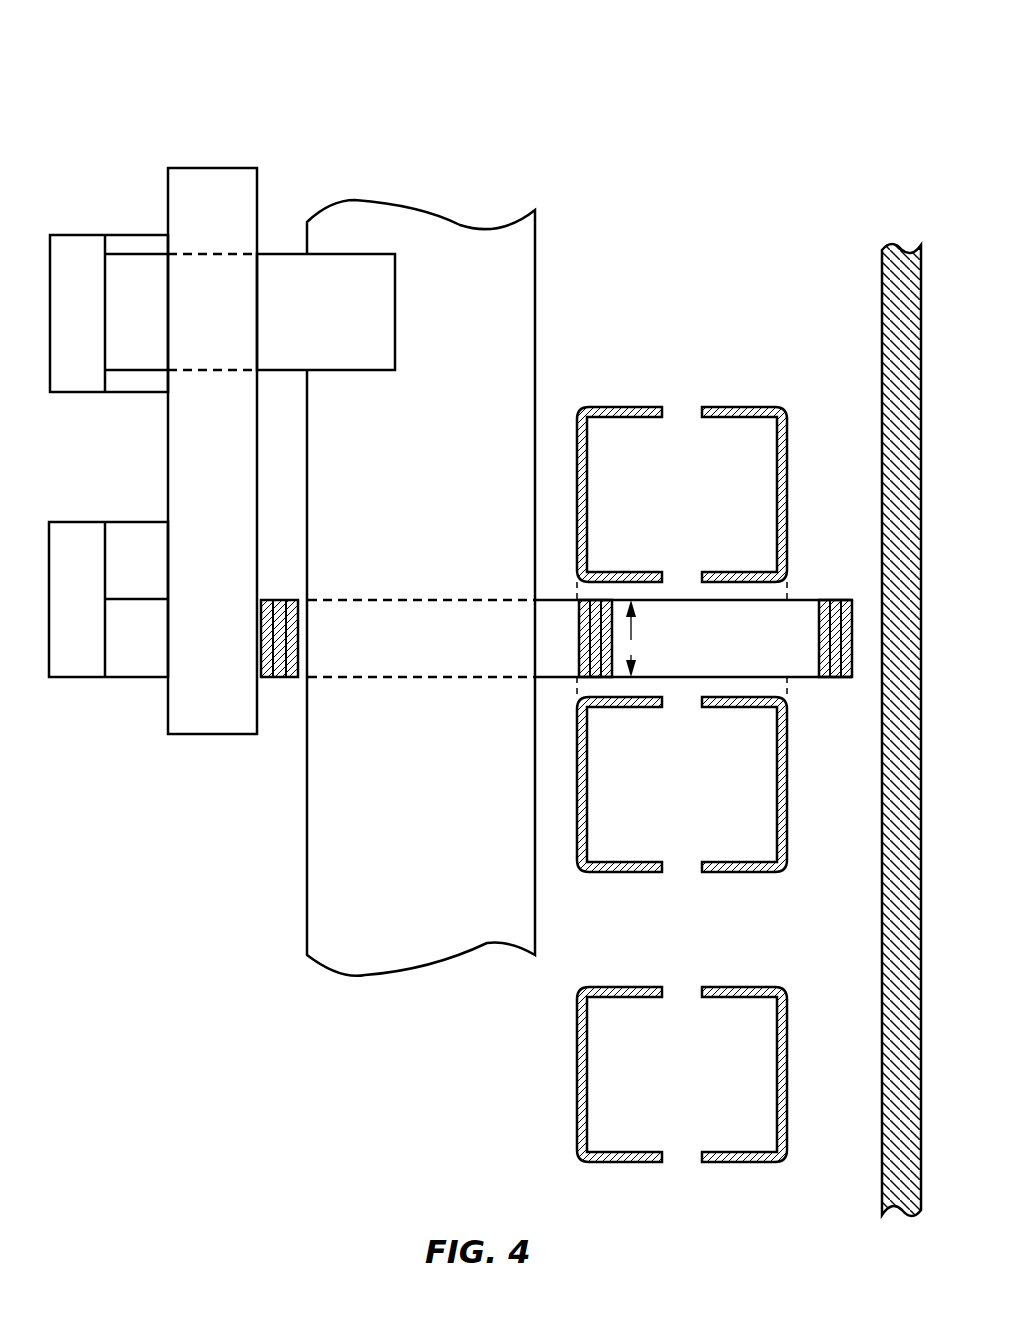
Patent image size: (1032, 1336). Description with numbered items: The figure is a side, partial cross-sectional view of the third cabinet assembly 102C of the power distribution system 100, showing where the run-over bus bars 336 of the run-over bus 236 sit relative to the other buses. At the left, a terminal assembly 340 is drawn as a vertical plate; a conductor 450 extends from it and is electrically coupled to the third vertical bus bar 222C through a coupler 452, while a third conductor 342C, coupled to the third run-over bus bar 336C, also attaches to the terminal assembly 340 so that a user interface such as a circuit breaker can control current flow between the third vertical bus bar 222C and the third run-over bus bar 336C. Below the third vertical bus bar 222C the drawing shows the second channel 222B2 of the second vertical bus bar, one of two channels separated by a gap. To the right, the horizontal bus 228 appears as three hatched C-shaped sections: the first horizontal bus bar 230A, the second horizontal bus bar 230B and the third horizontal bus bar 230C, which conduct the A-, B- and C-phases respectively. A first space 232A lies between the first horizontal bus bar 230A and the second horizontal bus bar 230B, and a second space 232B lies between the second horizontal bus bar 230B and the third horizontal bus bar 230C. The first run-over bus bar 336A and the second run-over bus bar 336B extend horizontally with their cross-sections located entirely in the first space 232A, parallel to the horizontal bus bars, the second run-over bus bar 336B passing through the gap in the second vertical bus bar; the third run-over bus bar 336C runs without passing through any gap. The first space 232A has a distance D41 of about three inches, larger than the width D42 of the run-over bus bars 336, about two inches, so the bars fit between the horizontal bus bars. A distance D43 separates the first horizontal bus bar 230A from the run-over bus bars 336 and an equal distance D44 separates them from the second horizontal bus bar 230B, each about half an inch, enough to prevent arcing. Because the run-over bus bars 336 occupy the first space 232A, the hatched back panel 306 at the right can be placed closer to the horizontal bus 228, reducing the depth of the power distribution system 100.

The power distribution system 100 is at (486, 84).
The third cabinet assembly 102C is at (595, 111).
The third vertical bus bar 222C is at (536, 268).
The second channel 222B2 is at (307, 820).
The horizontal bus 228 is at (651, 385).
The first horizontal bus bar 230A is at (745, 408).
The second horizontal bus bar 230B is at (737, 873).
The third horizontal bus bar 230C is at (737, 1163).
The first space 232A is at (793, 697).
The second space 232B is at (791, 951).
The run-over bus 236 is at (551, 586).
The back panel 306 is at (880, 296).
The run-over bus bars 336 is at (284, 686).
The first run-over bus bar 336A is at (812, 600).
The second run-over bus bar 336B is at (578, 680).
The third run-over bus bar 336C is at (270, 600).
The terminal assembly 340 is at (210, 168).
The third conductor 342C is at (122, 522).
The conductor 450 is at (133, 235).
The coupler 452 is at (338, 254).
The distance D41 is at (750, 590).
The width D42 is at (344, 607).
The distance D43 is at (631, 565).
The distance D44 is at (631, 714).